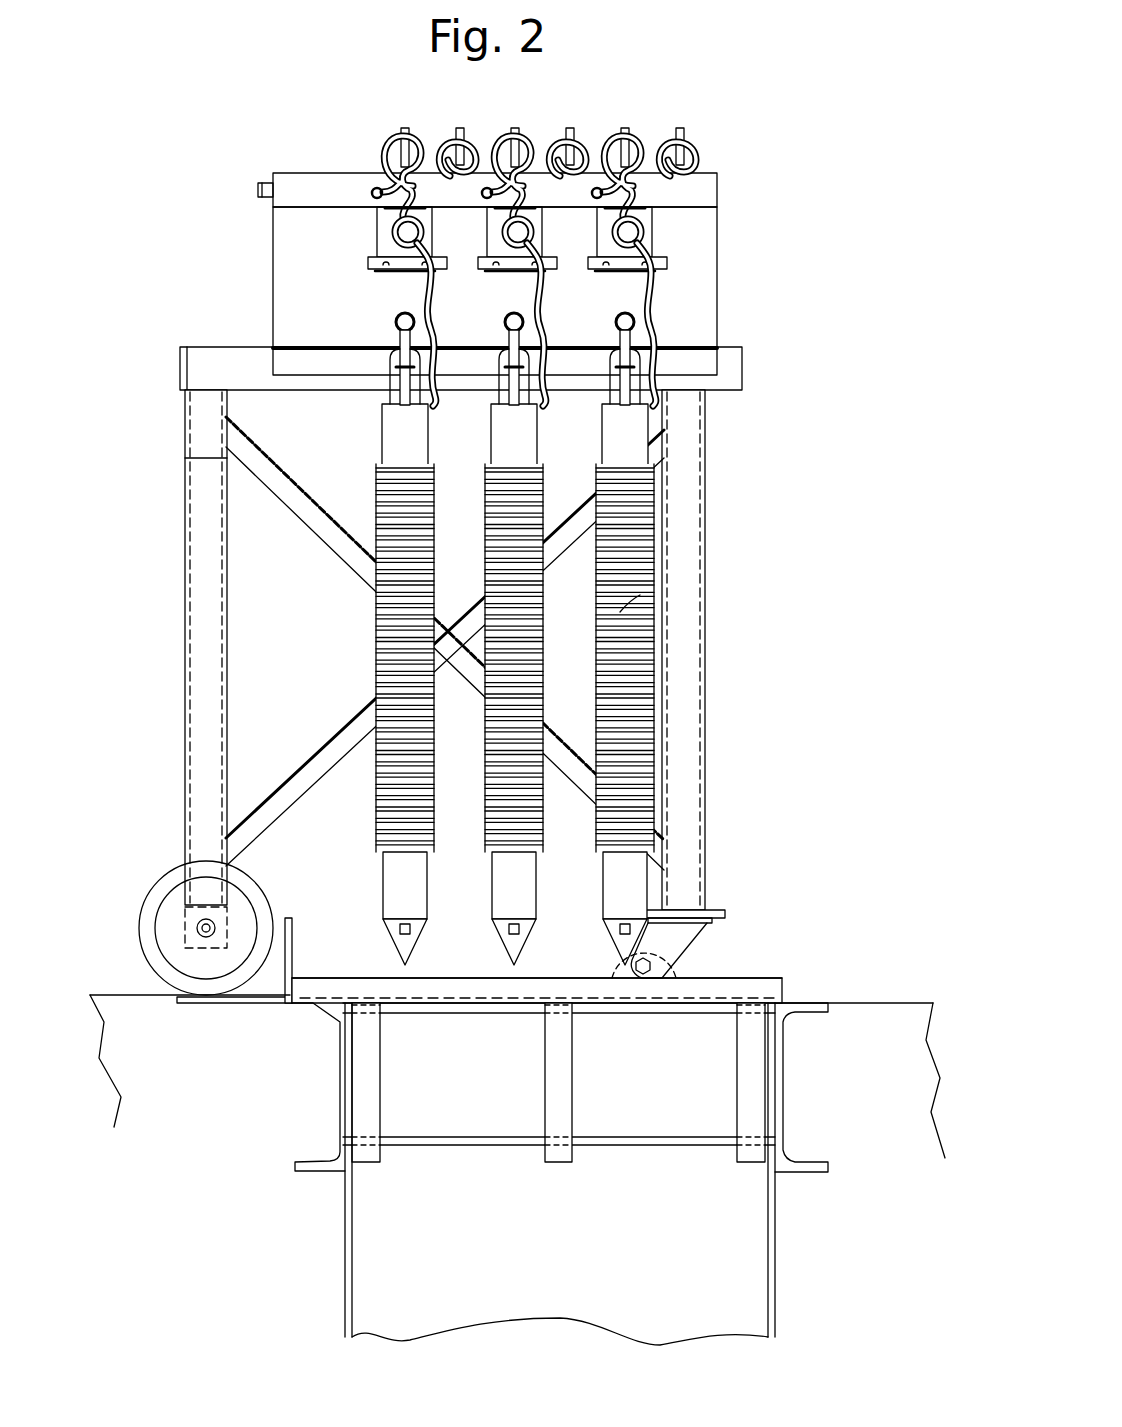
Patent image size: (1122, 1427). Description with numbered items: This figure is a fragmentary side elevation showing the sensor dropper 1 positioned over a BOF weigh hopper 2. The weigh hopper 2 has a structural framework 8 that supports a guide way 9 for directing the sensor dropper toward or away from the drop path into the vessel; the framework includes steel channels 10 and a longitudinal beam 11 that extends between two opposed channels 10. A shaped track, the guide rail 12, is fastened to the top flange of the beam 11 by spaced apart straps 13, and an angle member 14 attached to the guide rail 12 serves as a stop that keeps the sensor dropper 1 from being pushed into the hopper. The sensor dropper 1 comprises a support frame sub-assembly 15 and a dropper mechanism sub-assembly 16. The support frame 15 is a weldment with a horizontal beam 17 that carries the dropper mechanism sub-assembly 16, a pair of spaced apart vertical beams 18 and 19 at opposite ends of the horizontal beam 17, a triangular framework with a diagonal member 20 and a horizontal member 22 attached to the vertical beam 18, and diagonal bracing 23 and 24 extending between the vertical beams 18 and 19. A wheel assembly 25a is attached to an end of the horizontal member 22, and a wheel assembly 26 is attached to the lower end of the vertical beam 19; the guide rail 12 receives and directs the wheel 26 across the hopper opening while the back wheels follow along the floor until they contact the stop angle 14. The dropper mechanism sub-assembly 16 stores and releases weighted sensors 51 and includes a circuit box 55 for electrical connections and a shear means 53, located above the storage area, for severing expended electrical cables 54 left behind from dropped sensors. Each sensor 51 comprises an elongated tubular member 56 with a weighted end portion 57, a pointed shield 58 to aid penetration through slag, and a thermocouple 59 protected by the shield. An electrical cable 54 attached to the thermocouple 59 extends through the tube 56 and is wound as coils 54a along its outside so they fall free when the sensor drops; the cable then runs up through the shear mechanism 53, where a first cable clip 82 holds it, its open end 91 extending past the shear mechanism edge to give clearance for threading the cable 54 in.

The sensor dropper 1 is at (735, 164).
The weigh hopper 2 is at (278, 1252).
The structural framework 8 is at (795, 1100).
The guide way 9 is at (747, 972).
The steel channels 10 is at (335, 1160).
The longitudinal beam 11 is at (705, 1098).
The guide rail 12 is at (763, 987).
The straps 13 is at (370, 1072).
The angle member 14 is at (296, 930).
The support frame sub-assembly 15 is at (148, 628).
The dropper mechanism sub-assembly 16 is at (245, 270).
The horizontal beam 17 is at (233, 352).
The vertical beam 18 is at (207, 445).
The vertical beam 19 is at (685, 527).
The diagonal member 20 is at (190, 560).
The horizontal member 22 is at (180, 932).
The diagonal bracing 23 is at (305, 510).
The diagonal bracing 24 is at (300, 765).
The wheel assembly 25a is at (165, 885).
The wheel assembly 26 is at (670, 947).
The weighted sensors 51 is at (388, 438).
The shear means 53 is at (660, 236).
The electrical cable 54 is at (417, 293).
The electrical cable coils 54a is at (625, 607).
The circuit box 55 is at (331, 170).
The elongated tubular member 56 is at (386, 455).
The weighted end portion 57 is at (630, 883).
The pointed shield 58 is at (597, 940).
The thermocouple 59 is at (397, 933).
The first cable clip 82 is at (368, 263).
The open end 91 is at (446, 265).